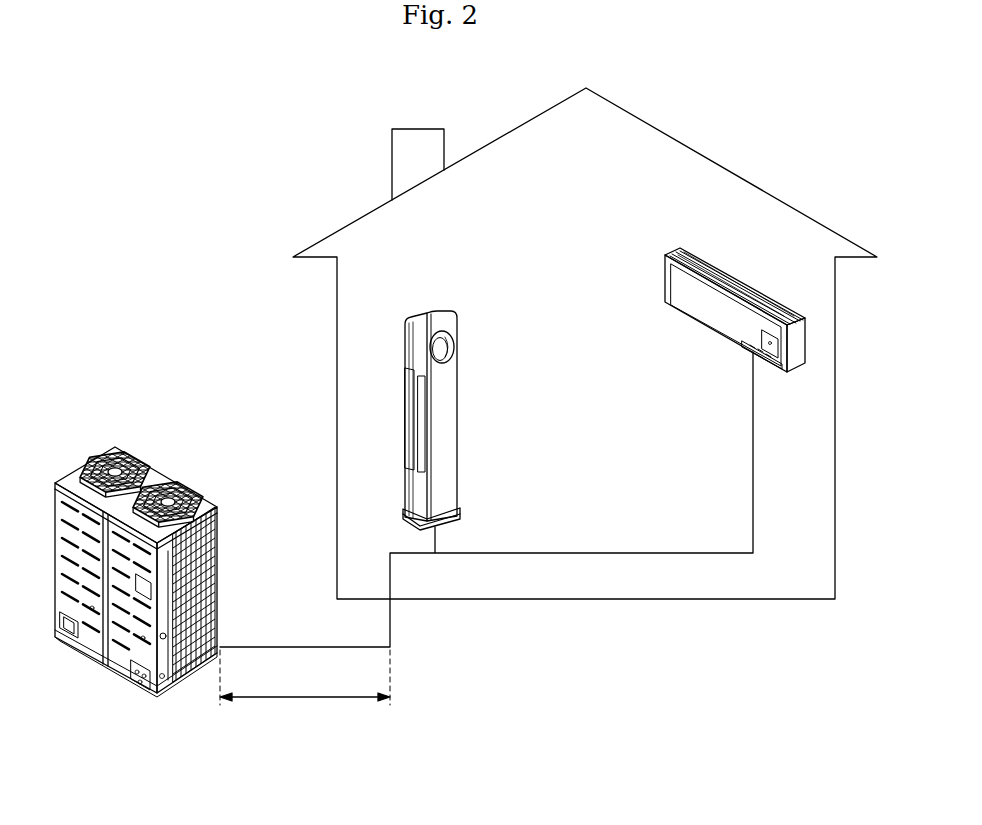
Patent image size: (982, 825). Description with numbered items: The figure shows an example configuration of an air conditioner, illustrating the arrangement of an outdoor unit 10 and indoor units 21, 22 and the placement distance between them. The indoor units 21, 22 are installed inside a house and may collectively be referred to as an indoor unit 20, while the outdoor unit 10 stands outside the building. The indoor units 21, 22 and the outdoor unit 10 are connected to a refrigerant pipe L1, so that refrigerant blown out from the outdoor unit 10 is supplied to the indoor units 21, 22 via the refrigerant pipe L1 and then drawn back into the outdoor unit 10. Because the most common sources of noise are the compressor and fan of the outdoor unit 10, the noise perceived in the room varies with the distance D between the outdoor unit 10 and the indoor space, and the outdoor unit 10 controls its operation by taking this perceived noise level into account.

The outdoor unit 10 is at (212, 501).
The indoor unit 20 is at (463, 242).
The indoor unit 21 is at (443, 313).
The indoor unit 22 is at (743, 291).
The refrigerant pipe L1 is at (270, 646).
The distance D is at (305, 686).